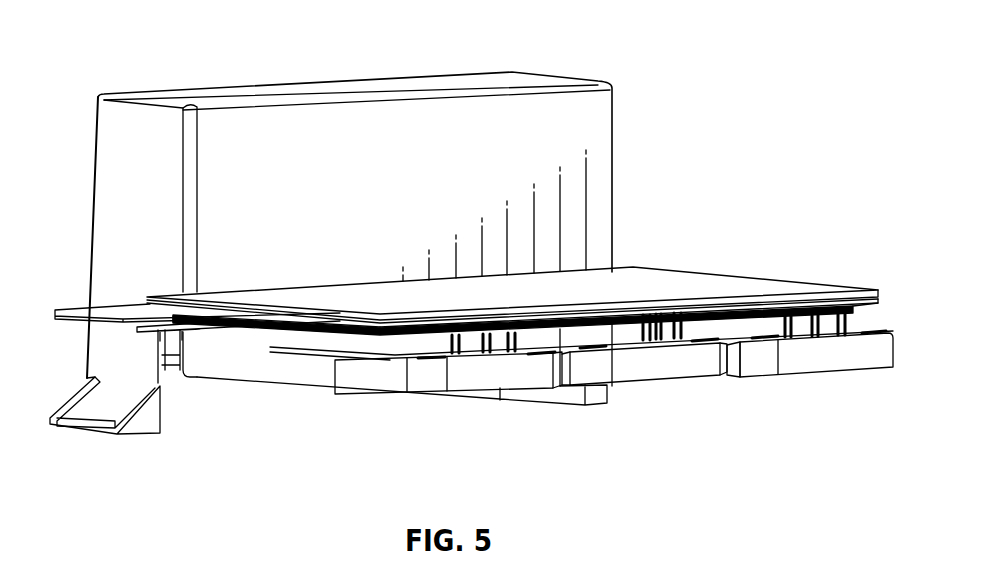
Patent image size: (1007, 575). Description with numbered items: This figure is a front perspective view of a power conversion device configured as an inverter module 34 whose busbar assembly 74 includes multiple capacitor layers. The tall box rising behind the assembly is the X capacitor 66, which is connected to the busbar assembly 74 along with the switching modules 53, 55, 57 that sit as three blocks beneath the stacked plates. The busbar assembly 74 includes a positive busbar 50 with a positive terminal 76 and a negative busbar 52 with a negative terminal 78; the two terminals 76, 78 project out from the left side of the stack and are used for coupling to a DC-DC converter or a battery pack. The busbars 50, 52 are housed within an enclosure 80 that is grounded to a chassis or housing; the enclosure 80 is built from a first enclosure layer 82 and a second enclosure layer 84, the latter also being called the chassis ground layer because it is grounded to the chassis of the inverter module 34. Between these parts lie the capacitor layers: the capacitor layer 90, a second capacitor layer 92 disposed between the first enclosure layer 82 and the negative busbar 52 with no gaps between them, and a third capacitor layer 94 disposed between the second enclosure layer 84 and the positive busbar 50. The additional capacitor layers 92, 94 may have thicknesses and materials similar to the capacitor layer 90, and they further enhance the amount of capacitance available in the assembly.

The inverter module 34 is at (145, 36).
The X capacitor 66 is at (598, 130).
The enclosure 80 is at (657, 274).
The first enclosure layer 82 is at (489, 316).
The negative busbar 52 is at (820, 297).
The second capacitor layer 92 is at (755, 300).
The busbar assembly 74 is at (870, 303).
The capacitor layer 90 is at (340, 322).
The positive busbar 50 is at (708, 315).
The negative terminal 78 is at (84, 311).
The positive terminal 76 is at (207, 328).
The third capacitor layer 94 is at (350, 338).
The switching module 53 is at (470, 395).
The second enclosure layer 84 is at (562, 328).
The switching module 55 is at (667, 370).
The switching module 57 is at (833, 362).